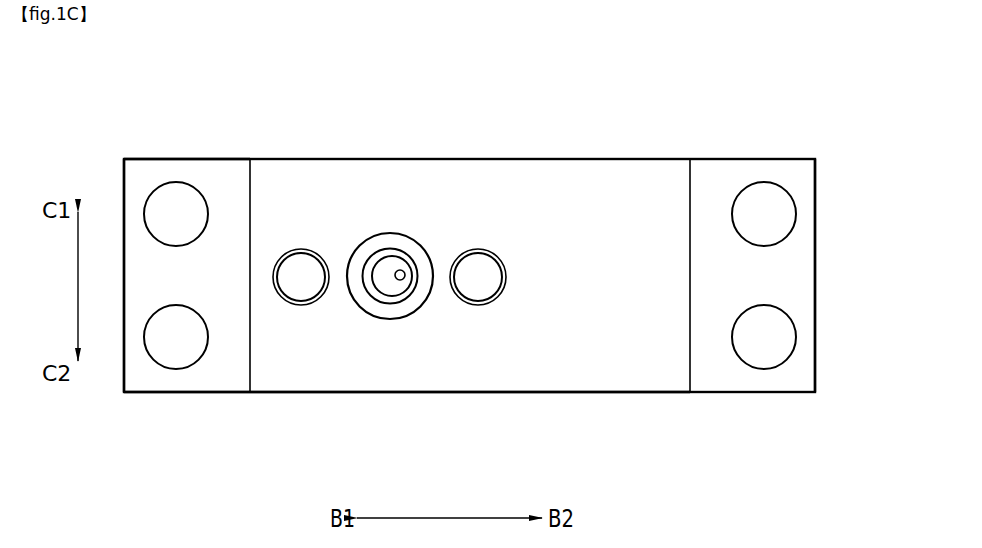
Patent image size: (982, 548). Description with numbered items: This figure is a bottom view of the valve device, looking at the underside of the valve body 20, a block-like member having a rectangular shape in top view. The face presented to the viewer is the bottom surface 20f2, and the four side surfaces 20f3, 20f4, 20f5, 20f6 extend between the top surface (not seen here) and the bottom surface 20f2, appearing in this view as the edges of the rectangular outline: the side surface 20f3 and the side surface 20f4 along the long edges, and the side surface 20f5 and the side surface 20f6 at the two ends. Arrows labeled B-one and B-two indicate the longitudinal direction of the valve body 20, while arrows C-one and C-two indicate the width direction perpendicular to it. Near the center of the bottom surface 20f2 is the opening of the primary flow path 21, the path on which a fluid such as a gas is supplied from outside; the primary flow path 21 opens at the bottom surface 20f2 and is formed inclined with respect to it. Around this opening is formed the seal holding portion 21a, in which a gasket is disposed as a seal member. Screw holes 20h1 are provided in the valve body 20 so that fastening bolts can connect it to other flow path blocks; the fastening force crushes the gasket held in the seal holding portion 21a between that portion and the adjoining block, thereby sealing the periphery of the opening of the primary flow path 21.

The valve body 20 is at (817, 229).
The bottom surface 20f2 is at (625, 342).
The side surface 20f3 is at (203, 158).
The side surface 20f4 is at (195, 392).
The side surface 20f5 is at (122, 355).
The side surface 20f6 is at (815, 353).
The screw holes 20h1 is at (307, 283).
The primary flow path 21 is at (408, 260).
The seal holding portion 21a is at (398, 283).